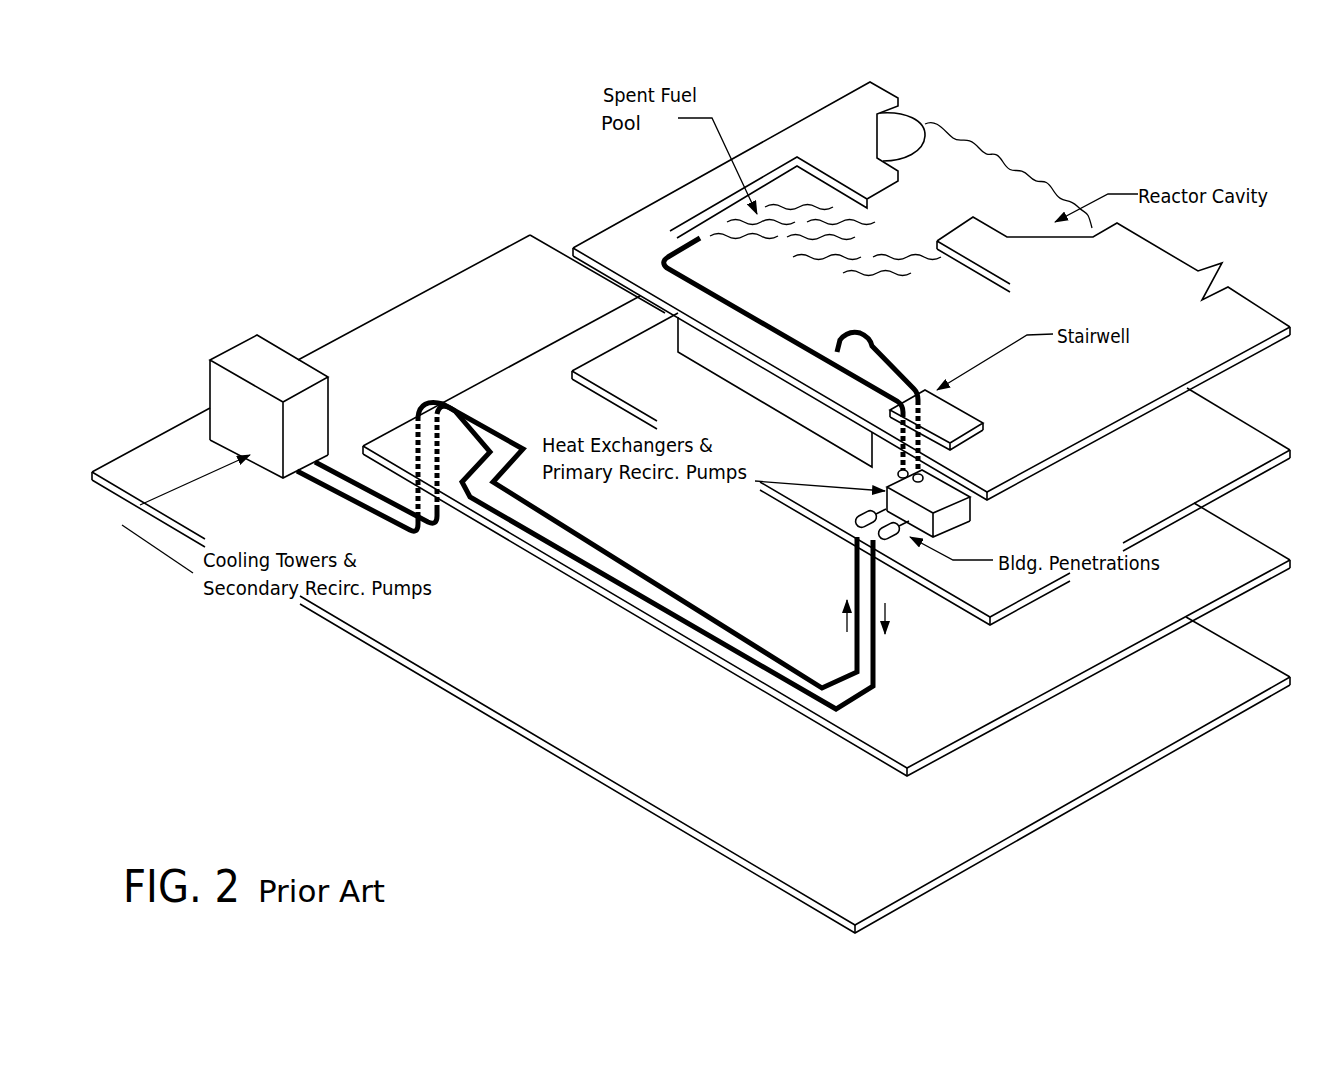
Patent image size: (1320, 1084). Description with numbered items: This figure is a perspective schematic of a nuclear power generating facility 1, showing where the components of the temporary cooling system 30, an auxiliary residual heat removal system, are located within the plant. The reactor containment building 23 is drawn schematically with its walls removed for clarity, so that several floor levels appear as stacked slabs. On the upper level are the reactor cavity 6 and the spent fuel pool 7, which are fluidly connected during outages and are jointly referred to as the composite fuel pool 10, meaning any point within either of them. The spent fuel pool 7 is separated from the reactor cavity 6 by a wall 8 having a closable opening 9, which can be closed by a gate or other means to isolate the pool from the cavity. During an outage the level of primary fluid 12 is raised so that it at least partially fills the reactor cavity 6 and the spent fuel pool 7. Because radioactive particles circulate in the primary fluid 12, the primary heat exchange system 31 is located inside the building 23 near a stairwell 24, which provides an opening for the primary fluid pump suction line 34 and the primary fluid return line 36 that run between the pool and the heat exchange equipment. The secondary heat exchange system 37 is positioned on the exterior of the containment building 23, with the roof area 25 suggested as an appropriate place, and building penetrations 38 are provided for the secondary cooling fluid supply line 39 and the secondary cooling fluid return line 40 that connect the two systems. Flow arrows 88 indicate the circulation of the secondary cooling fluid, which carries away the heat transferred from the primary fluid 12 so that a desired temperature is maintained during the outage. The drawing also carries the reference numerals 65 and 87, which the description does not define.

The nuclear power generating facility 1 is at (1230, 160).
The reactor cavity 6 is at (1027, 216).
The spent fuel pool 7 is at (903, 317).
The wall 8 is at (924, 123).
The closable opening 9 is at (920, 221).
The composite fuel pool 10 is at (967, 177).
The primary fluid 12 is at (810, 199).
The reactor containment building 23 is at (627, 188).
The stairwell 24 is at (983, 407).
The roof area 25 is at (394, 401).
The temporary cooling system 30 is at (990, 515).
The primary heat exchange system 31 is at (960, 580).
The primary fluid pump suction line 34 is at (878, 372).
The primary fluid return line 36 is at (670, 243).
The secondary heat exchange system 37 is at (287, 320).
The building penetrations 38 is at (866, 514).
The secondary cooling fluid supply line 39 is at (713, 610).
The secondary cooling fluid return line 40 is at (858, 690).
The pool water 65 is at (786, 301).
The pipe connectors 87 is at (888, 467).
The flow arrows 88 is at (853, 652).